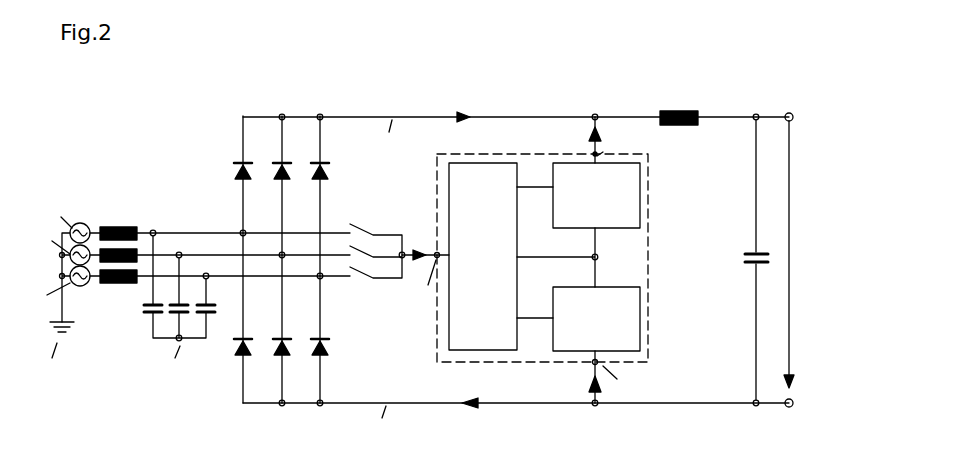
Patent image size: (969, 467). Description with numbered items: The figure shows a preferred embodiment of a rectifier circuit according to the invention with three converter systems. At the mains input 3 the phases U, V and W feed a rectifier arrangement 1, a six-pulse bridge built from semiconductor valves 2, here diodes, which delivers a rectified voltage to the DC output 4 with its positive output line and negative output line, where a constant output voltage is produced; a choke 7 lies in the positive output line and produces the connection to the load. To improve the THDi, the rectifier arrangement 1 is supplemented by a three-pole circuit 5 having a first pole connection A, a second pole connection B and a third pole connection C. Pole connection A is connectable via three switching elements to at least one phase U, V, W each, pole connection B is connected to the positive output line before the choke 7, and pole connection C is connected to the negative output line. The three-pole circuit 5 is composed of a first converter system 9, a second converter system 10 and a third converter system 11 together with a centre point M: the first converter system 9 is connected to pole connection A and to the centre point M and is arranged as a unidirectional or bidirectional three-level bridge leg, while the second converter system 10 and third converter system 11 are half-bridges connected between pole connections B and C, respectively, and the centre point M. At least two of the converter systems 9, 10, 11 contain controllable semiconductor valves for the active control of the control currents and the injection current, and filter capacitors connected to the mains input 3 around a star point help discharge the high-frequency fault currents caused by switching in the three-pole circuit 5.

The rectifier arrangement 1 is at (320, 104).
The semiconductor valve 2 is at (240, 180).
The mains input 3 is at (242, 142).
The DC output 4 is at (780, 95).
The three-pole circuit 5 is at (433, 198).
The choke 7 is at (684, 114).
The first converter system 9 is at (483, 256).
The second converter system 10 is at (596, 195).
The third converter system 11 is at (596, 319).